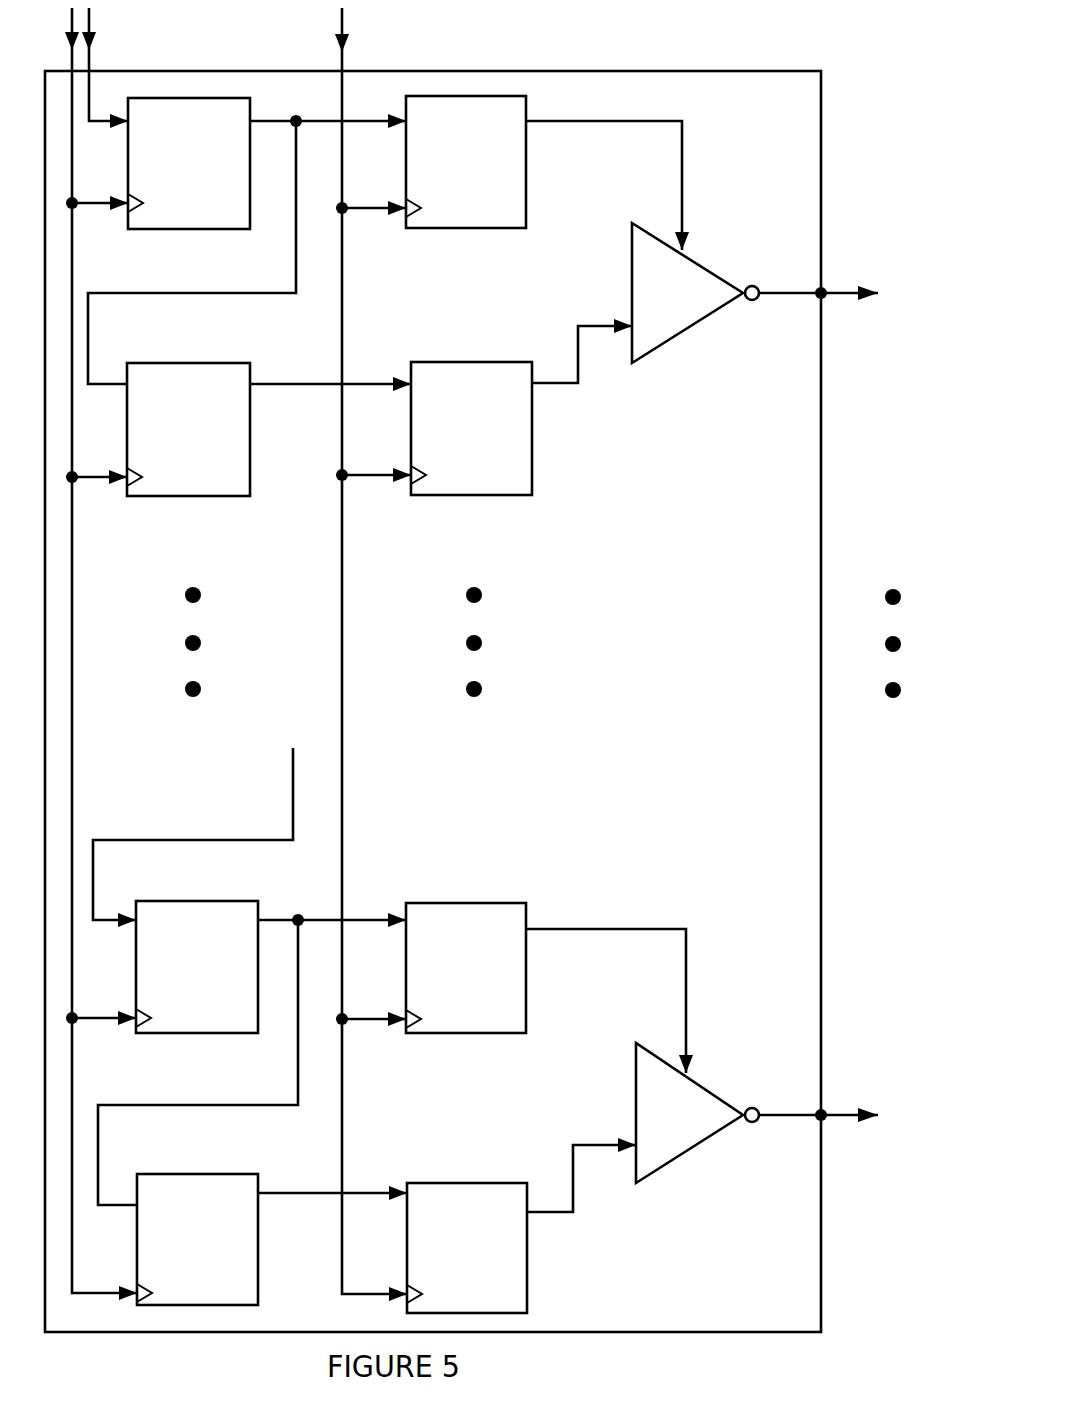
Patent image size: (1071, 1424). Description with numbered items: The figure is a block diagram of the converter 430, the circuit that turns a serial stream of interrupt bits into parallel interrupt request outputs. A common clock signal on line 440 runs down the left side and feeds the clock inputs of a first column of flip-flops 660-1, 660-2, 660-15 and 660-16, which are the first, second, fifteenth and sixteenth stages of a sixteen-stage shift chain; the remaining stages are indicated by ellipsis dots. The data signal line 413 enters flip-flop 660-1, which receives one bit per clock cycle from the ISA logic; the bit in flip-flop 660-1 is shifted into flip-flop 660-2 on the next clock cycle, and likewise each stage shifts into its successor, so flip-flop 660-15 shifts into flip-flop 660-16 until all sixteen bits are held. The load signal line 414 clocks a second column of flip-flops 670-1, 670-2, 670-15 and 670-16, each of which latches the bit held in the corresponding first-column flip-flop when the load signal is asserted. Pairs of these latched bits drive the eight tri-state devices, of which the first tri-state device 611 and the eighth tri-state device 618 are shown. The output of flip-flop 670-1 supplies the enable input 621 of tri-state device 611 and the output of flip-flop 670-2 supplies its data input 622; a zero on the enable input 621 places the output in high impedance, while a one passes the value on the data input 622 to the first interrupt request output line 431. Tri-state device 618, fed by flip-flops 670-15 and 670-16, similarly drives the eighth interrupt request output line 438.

The clock signal line 440 is at (87, 654).
The data signal line 413 is at (109, 68).
The load signal line 414 is at (355, 652).
The flip-flop 660-1 is at (198, 98).
The flip-flop 660-2 is at (178, 363).
The flip-flop 660-15 is at (196, 901).
The flip-flop 660-16 is at (190, 1174).
The flip-flop 670-1 is at (432, 96).
The flip-flop 670-2 is at (458, 362).
The flip-flop 670-15 is at (440, 903).
The flip-flop 670-16 is at (453, 1183).
The enable input 621 is at (605, 121).
The data input 622 is at (560, 383).
The tri-state device 611 is at (708, 272).
The tri-state device 618 is at (703, 1143).
The IRQ1 output line 431 is at (821, 293).
The IRQ8 output line 438 is at (821, 1115).
The converter 430 is at (695, 661).